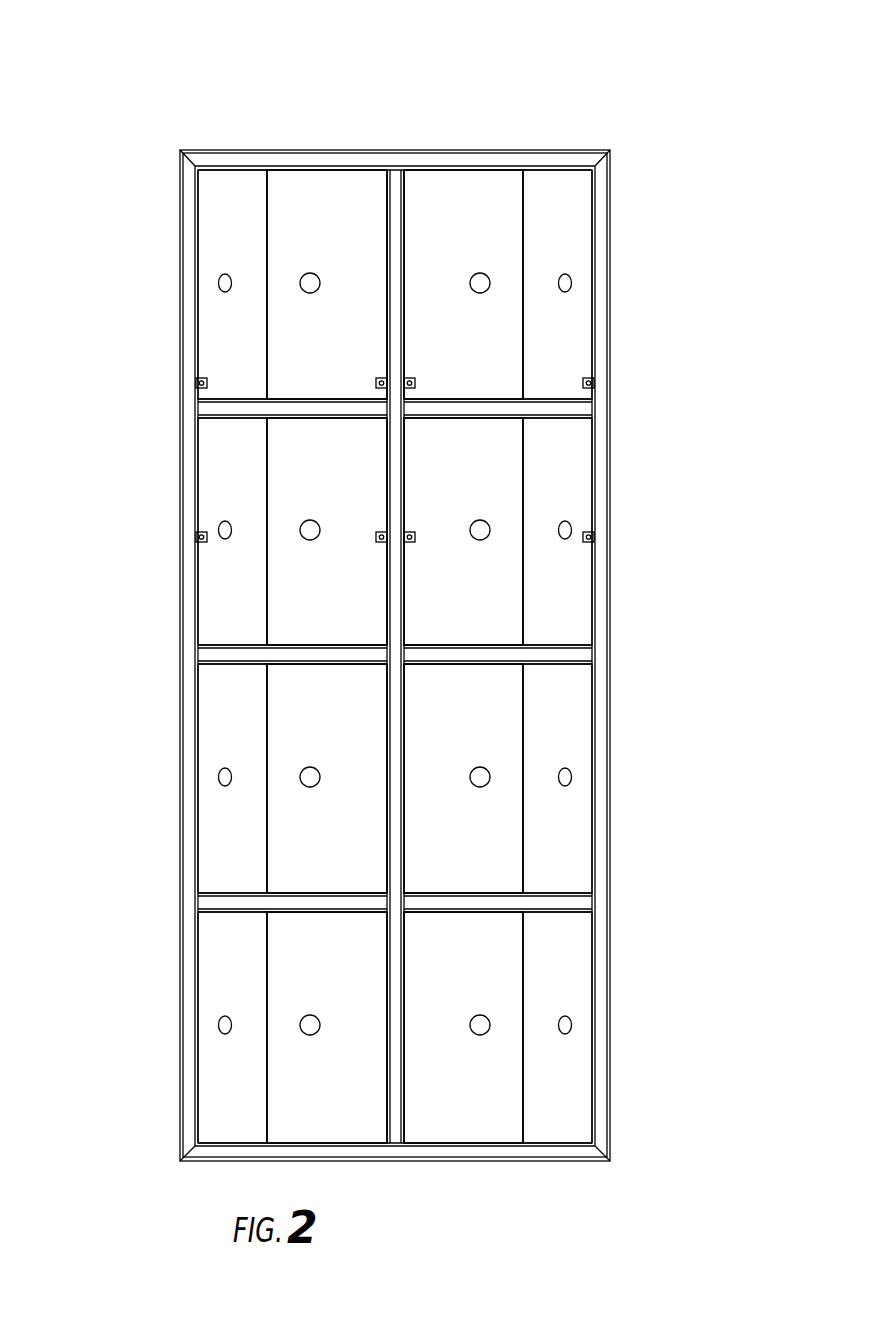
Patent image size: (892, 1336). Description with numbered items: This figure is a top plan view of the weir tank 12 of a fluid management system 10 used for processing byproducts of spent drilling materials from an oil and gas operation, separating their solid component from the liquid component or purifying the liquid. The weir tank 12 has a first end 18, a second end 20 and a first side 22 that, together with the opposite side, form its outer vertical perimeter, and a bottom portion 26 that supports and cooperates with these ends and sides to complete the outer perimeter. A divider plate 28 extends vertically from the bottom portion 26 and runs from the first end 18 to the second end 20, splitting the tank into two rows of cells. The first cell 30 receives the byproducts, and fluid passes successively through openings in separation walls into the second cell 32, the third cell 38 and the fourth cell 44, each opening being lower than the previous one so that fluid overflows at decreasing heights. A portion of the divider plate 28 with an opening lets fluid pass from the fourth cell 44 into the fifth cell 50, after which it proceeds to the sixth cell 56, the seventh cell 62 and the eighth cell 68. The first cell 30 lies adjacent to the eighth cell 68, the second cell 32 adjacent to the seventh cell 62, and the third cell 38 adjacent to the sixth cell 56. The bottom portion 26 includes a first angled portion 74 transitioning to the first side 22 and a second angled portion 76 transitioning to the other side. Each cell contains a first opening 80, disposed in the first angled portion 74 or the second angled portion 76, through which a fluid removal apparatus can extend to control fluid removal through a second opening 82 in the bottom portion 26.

The fluid management system 10 is at (700, 89).
The weir tank 12 is at (611, 252).
The first end 18 is at (332, 160).
The second end 20 is at (611, 421).
The first side 22 is at (180, 522).
The bottom portion 26 is at (292, 192).
The divider plate 28 is at (393, 198).
The first cell 30 is at (339, 238).
The second cell 32 is at (346, 475).
The third cell 38 is at (346, 721).
The fourth cell 44 is at (346, 961).
The fifth cell 50 is at (474, 961).
The sixth cell 56 is at (474, 719).
The seventh cell 62 is at (468, 474).
The eighth cell 68 is at (456, 225).
The first angled portion 74 is at (210, 355).
The second angled portion 76 is at (560, 195).
The first opening 80 is at (225, 292).
The second opening 82 is at (310, 293).